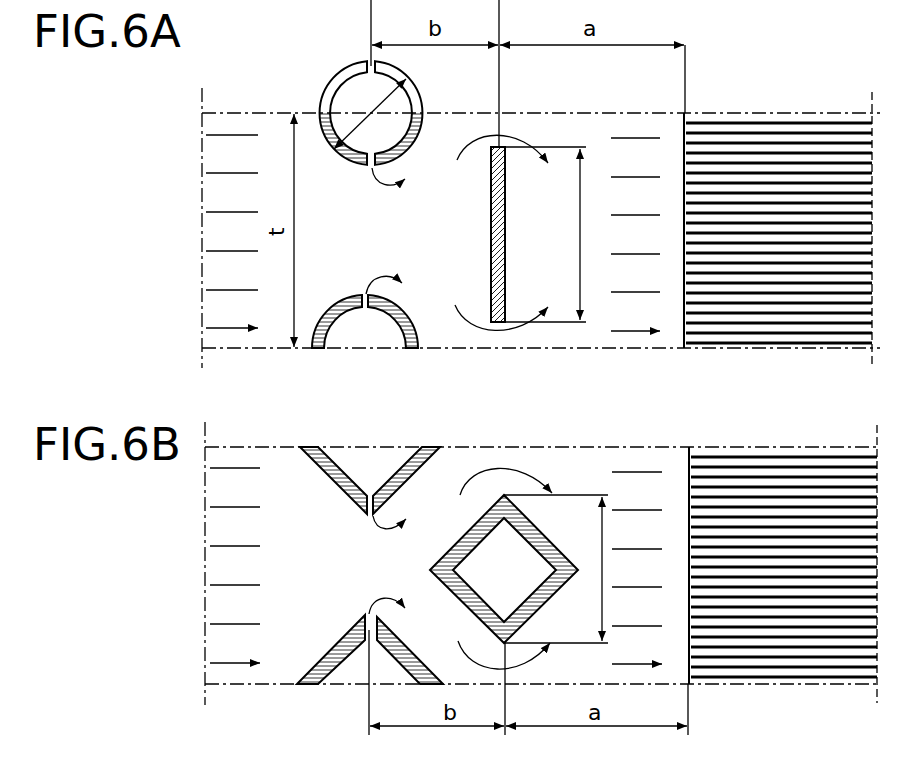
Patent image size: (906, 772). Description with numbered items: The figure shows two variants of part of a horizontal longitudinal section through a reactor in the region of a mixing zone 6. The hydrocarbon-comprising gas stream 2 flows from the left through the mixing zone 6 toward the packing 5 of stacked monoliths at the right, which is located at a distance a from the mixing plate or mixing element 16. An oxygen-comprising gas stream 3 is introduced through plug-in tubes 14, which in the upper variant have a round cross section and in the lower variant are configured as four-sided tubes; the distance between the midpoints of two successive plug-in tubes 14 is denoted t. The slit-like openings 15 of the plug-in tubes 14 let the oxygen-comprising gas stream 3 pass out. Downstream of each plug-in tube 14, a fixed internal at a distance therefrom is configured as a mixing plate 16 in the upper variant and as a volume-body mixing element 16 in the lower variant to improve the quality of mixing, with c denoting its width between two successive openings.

In FIG. 6A, the hydrocarbon-comprising gas stream 2 is at (220, 135).
In FIG. 6B, the hydrocarbon-comprising gas stream 2 is at (226, 468).
In FIG. 6A, the oxygen-comprising gas stream 3 is at (390, 189).
In FIG. 6B, the oxygen-comprising gas stream 3 is at (380, 524).
In FIG. 6A, the packing 5 is at (778, 336).
In FIG. 6B, the packing 5 is at (765, 458).
In FIG. 6A, the mixing zone 6 is at (468, 180).
In FIG. 6A, the plug-in tube 14 is at (410, 336).
In FIG. 6B, the plug-in tube 14 is at (417, 456).
In FIG. 6A, the slit 15 is at (364, 296).
In FIG. 6B, the slit 15 is at (373, 510).
In FIG. 6A, the mixing plate or mixing element 16 is at (456, 306).
In FIG. 6B, the mixing plate or mixing element 16 is at (464, 533).